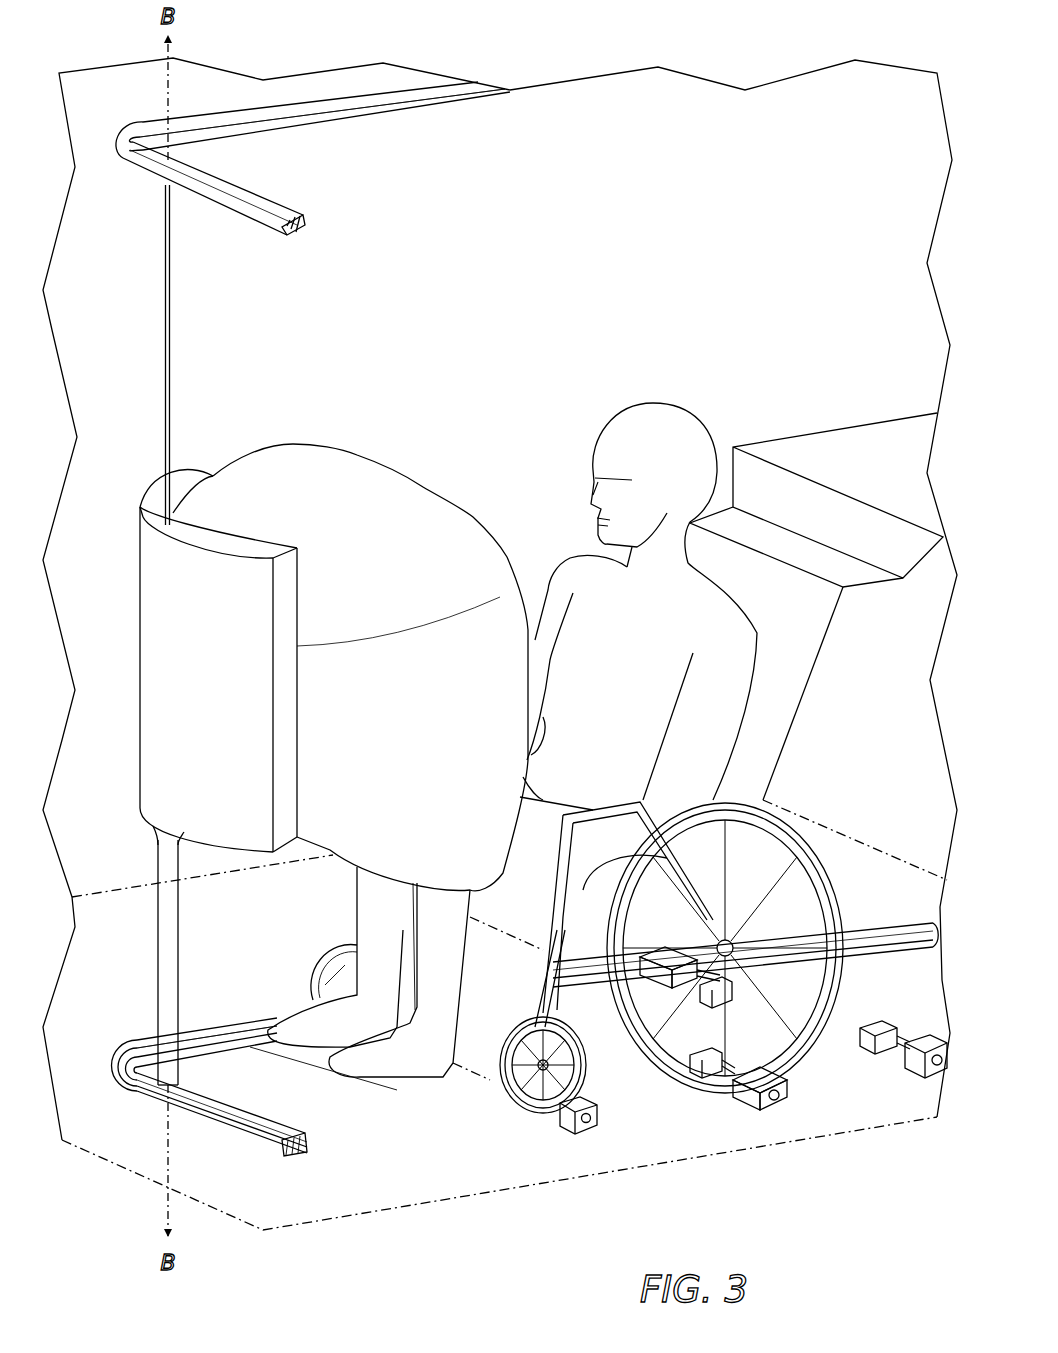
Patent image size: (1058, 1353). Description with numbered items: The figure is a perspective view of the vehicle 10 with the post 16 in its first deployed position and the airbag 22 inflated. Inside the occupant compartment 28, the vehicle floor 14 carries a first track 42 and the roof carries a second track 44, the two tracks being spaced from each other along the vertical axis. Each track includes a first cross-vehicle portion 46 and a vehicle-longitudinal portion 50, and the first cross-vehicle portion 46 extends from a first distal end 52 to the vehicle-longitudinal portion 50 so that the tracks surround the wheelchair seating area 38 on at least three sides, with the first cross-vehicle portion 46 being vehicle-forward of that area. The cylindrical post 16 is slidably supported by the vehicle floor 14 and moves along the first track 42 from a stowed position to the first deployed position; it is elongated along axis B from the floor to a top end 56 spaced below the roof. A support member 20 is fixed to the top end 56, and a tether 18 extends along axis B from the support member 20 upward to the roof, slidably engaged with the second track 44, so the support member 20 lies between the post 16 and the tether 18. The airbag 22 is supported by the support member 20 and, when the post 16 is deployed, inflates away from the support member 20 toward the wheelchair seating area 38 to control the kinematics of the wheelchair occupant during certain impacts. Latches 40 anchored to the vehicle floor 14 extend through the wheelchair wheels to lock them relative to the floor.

The vehicle 10 is at (804, 49).
The vehicle floor 14 is at (490, 1158).
The post 16 is at (165, 948).
The tether 18 is at (165, 313).
The support member 20 is at (232, 802).
The airbag 22 is at (358, 449).
The occupant compartment 28 is at (598, 168).
The wheelchair seating area 38 is at (514, 461).
The latches 40 is at (593, 1040).
The first track 42 is at (224, 1019).
The second track 44 is at (313, 608).
The first cross-vehicle portion 46 is at (243, 203).
The vehicle-longitudinal portion 50 is at (377, 103).
The first distal end 52 is at (304, 230).
The top end 56 is at (153, 840).